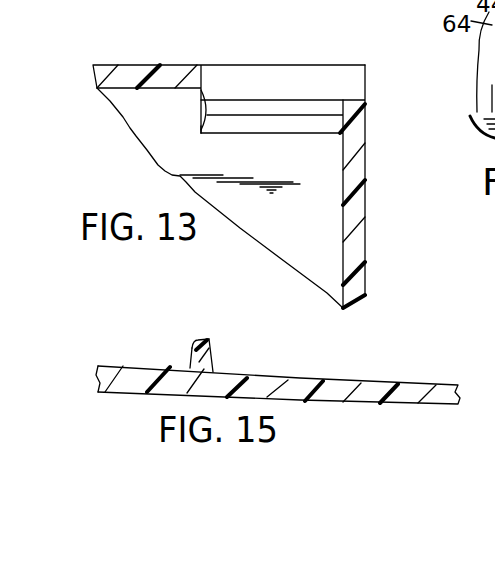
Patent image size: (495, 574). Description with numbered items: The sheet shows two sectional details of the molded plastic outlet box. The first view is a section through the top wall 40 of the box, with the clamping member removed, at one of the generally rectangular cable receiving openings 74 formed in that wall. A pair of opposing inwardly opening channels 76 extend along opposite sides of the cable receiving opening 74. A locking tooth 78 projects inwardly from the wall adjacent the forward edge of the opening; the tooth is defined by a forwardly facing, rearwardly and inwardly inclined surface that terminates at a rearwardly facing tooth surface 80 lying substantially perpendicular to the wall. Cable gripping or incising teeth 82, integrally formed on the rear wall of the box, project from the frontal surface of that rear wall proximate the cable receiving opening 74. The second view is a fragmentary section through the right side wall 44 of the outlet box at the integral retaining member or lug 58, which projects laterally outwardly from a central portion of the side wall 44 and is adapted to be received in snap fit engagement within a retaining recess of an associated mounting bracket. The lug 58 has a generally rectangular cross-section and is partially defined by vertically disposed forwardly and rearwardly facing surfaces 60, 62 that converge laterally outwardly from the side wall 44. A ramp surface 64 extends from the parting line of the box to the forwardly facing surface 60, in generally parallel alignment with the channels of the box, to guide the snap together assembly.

In FIG. 13, the top wall 40 is at (167, 65).
In FIG. 13, the cable receiving opening 74 is at (302, 87).
In FIG. 13, the inwardly opening channel 76 is at (255, 110).
In FIG. 13, the locking tooth 78 is at (199, 92).
In FIG. 13, the rearwardly facing tooth surface 80 is at (200, 132).
In FIG. 13, the cable gripping or incising tooth 82 is at (337, 130).
In FIG. 15, the right side wall 44 is at (303, 380).
In FIG. 15, the retaining member or lug 58 is at (203, 355).
In FIG. 15, the forwardly facing surface 60 is at (190, 358).
In FIG. 15, the rearwardly facing surface 62 is at (215, 363).
In FIG. 15, the ramp surface 64 is at (163, 366).